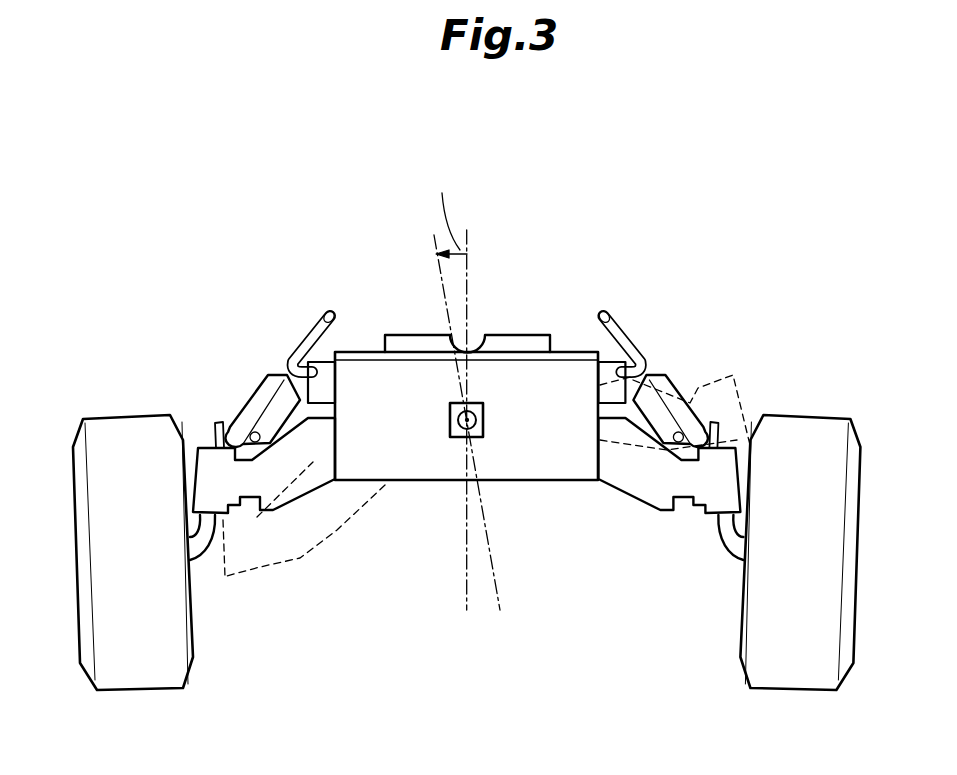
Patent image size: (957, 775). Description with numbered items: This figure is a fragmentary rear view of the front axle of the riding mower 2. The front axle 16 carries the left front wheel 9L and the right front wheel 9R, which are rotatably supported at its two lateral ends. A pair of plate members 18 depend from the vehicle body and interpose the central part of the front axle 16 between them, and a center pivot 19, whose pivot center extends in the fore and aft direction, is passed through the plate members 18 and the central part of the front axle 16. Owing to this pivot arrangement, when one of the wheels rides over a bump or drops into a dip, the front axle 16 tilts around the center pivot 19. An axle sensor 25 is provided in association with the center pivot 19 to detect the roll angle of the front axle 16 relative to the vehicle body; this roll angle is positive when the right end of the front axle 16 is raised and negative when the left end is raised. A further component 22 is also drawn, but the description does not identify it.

The riding mower 2 is at (477, 397).
The left front wheel 9L is at (72, 500).
The right front wheel 9R is at (862, 500).
The front axle 16 is at (317, 480).
The plate members 18 is at (363, 370).
The center pivot 19 is at (453, 432).
The damper 22 is at (680, 370).
The axle sensor 25 is at (483, 420).